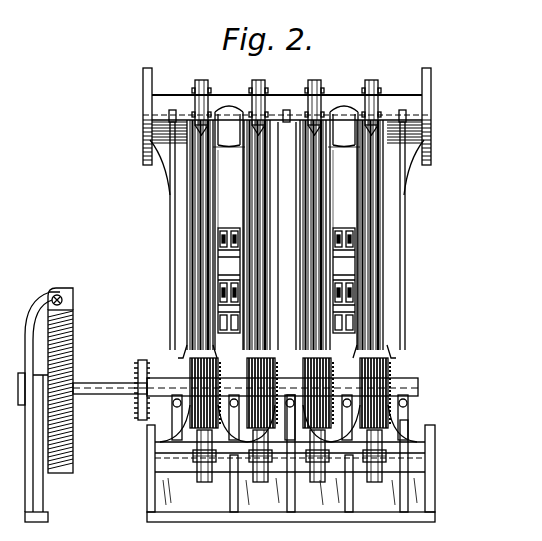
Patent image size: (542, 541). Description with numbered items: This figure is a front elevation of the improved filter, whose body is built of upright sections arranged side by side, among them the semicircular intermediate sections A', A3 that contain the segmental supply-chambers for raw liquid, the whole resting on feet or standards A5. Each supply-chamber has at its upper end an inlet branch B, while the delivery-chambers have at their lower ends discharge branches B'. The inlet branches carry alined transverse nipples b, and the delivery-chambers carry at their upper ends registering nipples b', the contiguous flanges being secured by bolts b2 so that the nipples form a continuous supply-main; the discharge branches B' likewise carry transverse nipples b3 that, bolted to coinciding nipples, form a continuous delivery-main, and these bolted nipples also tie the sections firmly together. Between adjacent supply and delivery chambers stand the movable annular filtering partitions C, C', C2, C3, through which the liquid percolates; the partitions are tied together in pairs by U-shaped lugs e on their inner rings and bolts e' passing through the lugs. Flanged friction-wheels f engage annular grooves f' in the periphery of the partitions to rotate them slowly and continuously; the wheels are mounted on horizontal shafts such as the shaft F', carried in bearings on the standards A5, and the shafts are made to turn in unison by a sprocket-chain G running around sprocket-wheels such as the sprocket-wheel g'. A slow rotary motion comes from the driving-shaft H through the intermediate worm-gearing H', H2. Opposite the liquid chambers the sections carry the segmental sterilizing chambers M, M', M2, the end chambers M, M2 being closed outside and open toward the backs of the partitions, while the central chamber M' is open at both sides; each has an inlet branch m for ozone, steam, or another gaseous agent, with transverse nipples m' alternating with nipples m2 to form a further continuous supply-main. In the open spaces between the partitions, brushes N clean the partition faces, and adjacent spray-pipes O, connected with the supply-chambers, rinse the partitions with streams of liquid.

The nipples b' is at (287, 95).
The transverse nipples b is at (286, 104).
The bolts b2 is at (207, 88).
The transverse nipples b3 is at (430, 117).
The inlet branches B is at (286, 228).
The discharge branches B' is at (294, 383).
The annular grooves f' is at (286, 162).
The flanged friction-wheels f is at (296, 334).
The sterilizing chamber M is at (283, 236).
The central sterilizing chamber M' is at (287, 236).
The sterilizing chamber M2 is at (412, 236).
The intermediate section A' is at (227, 189).
The intermediate section A3 is at (343, 189).
The feet or standards A5 is at (158, 500).
The filtering partition C is at (179, 235).
The filtering partition C' is at (270, 235).
The filtering partition C2 is at (312, 242).
The filtering partition C3 is at (370, 250).
The U-shaped lugs e is at (229, 280).
The bolts e' is at (344, 280).
The spray-pipes O is at (338, 357).
The brushes N is at (288, 418).
The inlet branch m is at (255, 466).
The transverse nipples m' is at (308, 472).
The nipples m2 is at (315, 466).
The driving-shaft H is at (55, 407).
The worm-gearing H' is at (68, 287).
The worm-gearing H2 is at (62, 434).
The horizontal shaft F' is at (110, 379).
The sprocket-chain G is at (135, 418).
The sprocket-wheel g' is at (133, 382).